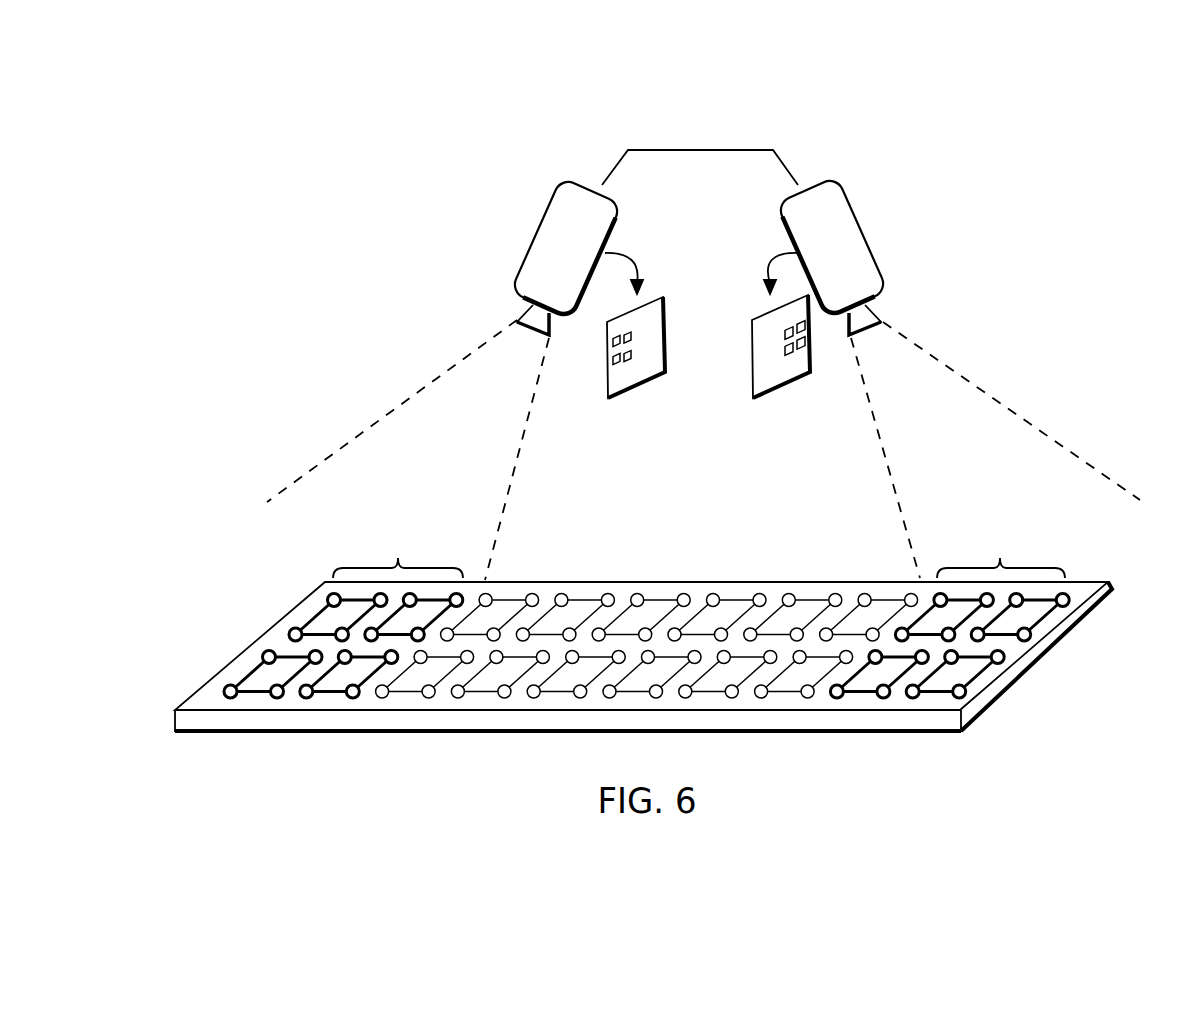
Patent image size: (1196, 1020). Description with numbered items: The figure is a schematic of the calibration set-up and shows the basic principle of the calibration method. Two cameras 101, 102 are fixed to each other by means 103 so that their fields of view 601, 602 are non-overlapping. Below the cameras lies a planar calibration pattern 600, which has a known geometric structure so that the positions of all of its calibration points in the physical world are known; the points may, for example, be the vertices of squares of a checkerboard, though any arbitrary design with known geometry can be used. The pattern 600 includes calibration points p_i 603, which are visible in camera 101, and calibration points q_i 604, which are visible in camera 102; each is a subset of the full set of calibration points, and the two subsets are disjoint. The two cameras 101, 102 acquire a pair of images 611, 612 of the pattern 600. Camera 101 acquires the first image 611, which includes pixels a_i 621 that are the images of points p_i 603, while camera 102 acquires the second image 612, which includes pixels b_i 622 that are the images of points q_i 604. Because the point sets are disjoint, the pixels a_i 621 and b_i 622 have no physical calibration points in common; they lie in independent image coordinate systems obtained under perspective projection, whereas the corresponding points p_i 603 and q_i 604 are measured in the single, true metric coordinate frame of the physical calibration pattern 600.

The camera 101 is at (541, 226).
The camera 102 is at (858, 226).
The means 103 is at (697, 149).
The planar calibration pattern 600 is at (1057, 615).
The field of view 601 is at (417, 393).
The field of view 602 is at (975, 382).
The calibration points p_i 603 is at (343, 614).
The calibration points q_i 604 is at (949, 614).
The first image 611 is at (637, 387).
The second image 612 is at (777, 393).
The pixels a_i 621 is at (617, 330).
The pixels b_i 622 is at (807, 337).